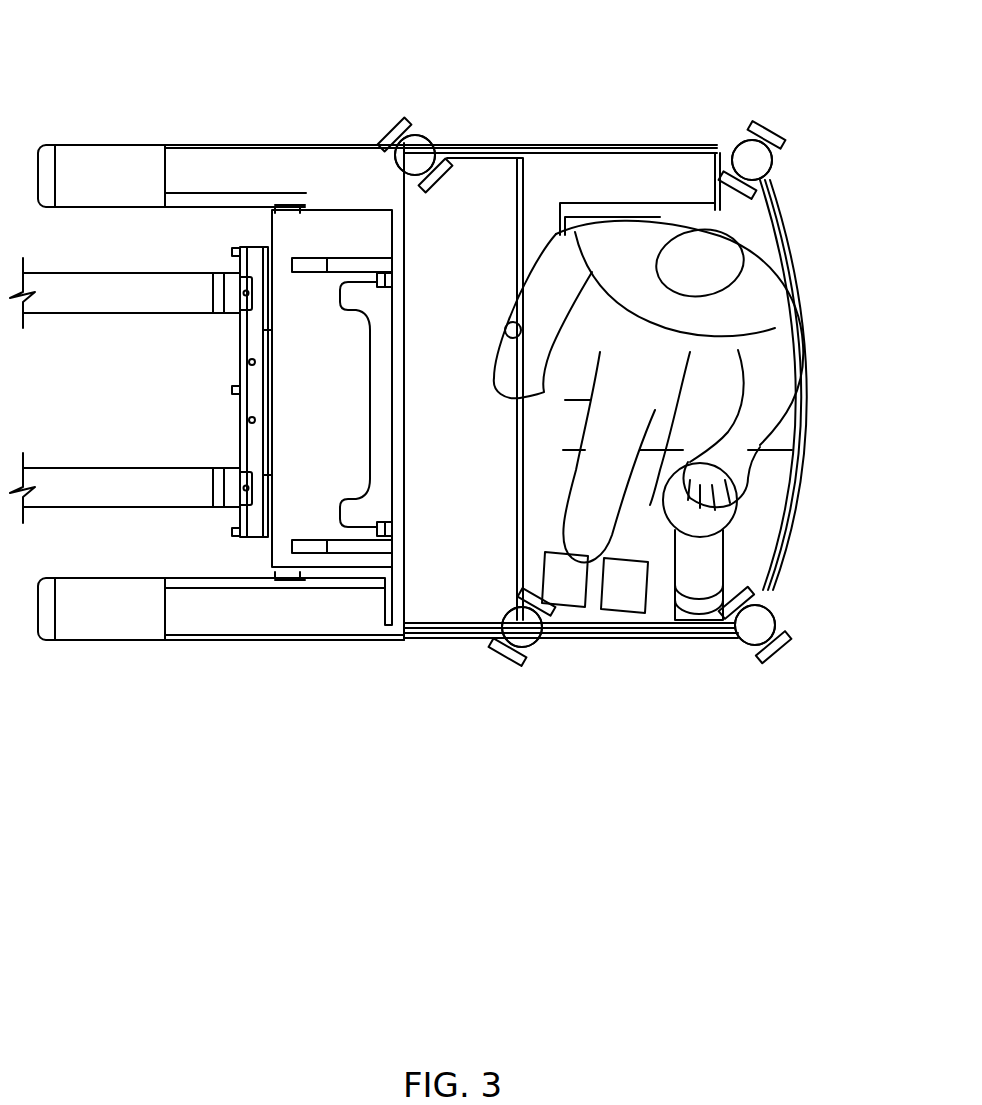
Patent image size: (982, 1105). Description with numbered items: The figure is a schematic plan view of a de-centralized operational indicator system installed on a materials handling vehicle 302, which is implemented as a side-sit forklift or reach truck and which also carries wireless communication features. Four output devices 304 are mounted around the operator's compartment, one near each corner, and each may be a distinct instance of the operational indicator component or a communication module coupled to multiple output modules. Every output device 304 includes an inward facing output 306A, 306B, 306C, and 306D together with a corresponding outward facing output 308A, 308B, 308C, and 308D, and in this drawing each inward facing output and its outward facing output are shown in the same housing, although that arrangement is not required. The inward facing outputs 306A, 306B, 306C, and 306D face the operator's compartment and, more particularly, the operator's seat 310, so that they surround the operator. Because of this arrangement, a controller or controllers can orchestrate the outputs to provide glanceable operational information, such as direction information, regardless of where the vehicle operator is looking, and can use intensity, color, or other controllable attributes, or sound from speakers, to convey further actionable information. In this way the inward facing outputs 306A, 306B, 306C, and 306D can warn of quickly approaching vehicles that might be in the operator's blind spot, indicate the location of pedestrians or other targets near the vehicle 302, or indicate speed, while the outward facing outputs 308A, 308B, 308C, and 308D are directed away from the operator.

The materials handling vehicle 302 is at (218, 123).
The output device 304 is at (418, 148).
The inward facing output 306A is at (551, 606).
The inward facing output 306B is at (440, 140).
The inward facing output 306C is at (771, 195).
The inward facing output 306D is at (767, 588).
The outward facing output 308A is at (512, 652).
The outward facing output 308B is at (395, 130).
The outward facing output 308C is at (776, 140).
The outward facing output 308D is at (768, 655).
The operator's seat 310 is at (775, 246).